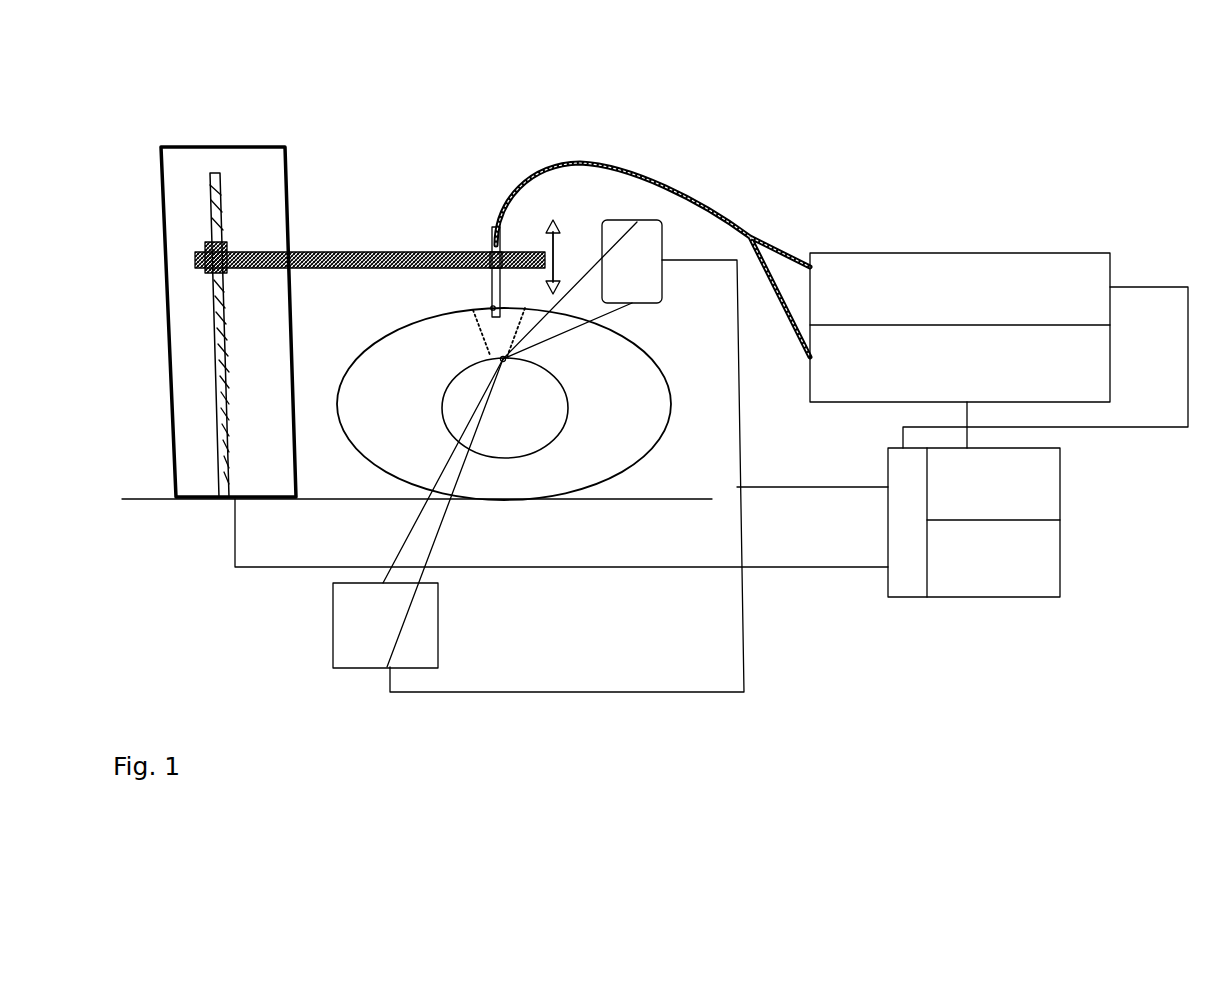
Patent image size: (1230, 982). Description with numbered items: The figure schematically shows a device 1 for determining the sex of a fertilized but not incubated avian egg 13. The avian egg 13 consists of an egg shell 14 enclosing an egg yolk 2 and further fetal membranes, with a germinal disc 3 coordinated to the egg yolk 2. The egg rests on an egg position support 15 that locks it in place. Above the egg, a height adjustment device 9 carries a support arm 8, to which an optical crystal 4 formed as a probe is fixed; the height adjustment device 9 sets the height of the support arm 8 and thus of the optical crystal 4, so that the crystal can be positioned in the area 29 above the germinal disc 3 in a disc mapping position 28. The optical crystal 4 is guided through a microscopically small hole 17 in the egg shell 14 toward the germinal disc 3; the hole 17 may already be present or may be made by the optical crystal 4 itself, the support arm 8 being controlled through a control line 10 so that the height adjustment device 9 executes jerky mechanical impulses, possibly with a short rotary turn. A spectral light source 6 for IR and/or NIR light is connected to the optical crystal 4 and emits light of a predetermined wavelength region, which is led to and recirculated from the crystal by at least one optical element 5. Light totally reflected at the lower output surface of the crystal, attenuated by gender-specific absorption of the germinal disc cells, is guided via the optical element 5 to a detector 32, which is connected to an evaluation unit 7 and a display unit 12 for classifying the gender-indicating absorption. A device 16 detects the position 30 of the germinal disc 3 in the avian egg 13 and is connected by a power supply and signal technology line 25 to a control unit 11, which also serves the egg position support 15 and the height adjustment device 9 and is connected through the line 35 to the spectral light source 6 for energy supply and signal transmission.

The device 1 is at (817, 145).
The egg yolk 2 is at (527, 407).
The germinal disc 3 is at (503, 359).
The optical crystal 4 is at (495, 291).
The optical element 5 is at (553, 164).
The spectral light source 6 is at (868, 251).
The evaluation unit 7 is at (1030, 502).
The support arm 8 is at (325, 252).
The height adjustment device 9 is at (195, 167).
The control line 10 is at (657, 568).
The control unit 11 is at (910, 582).
The display unit 12 is at (1003, 584).
The avian egg 13 is at (647, 408).
The egg shell 14 is at (663, 377).
The egg position support 15 is at (585, 502).
The device for detecting the position 16 is at (649, 247).
The hole 17 is at (490, 307).
The power supply and signal technology line 25 is at (832, 489).
The disc mapping position 28 is at (523, 291).
The area 29 is at (493, 334).
The position 30 is at (492, 359).
The detector 32 is at (1110, 365).
The line 35 is at (1105, 427).